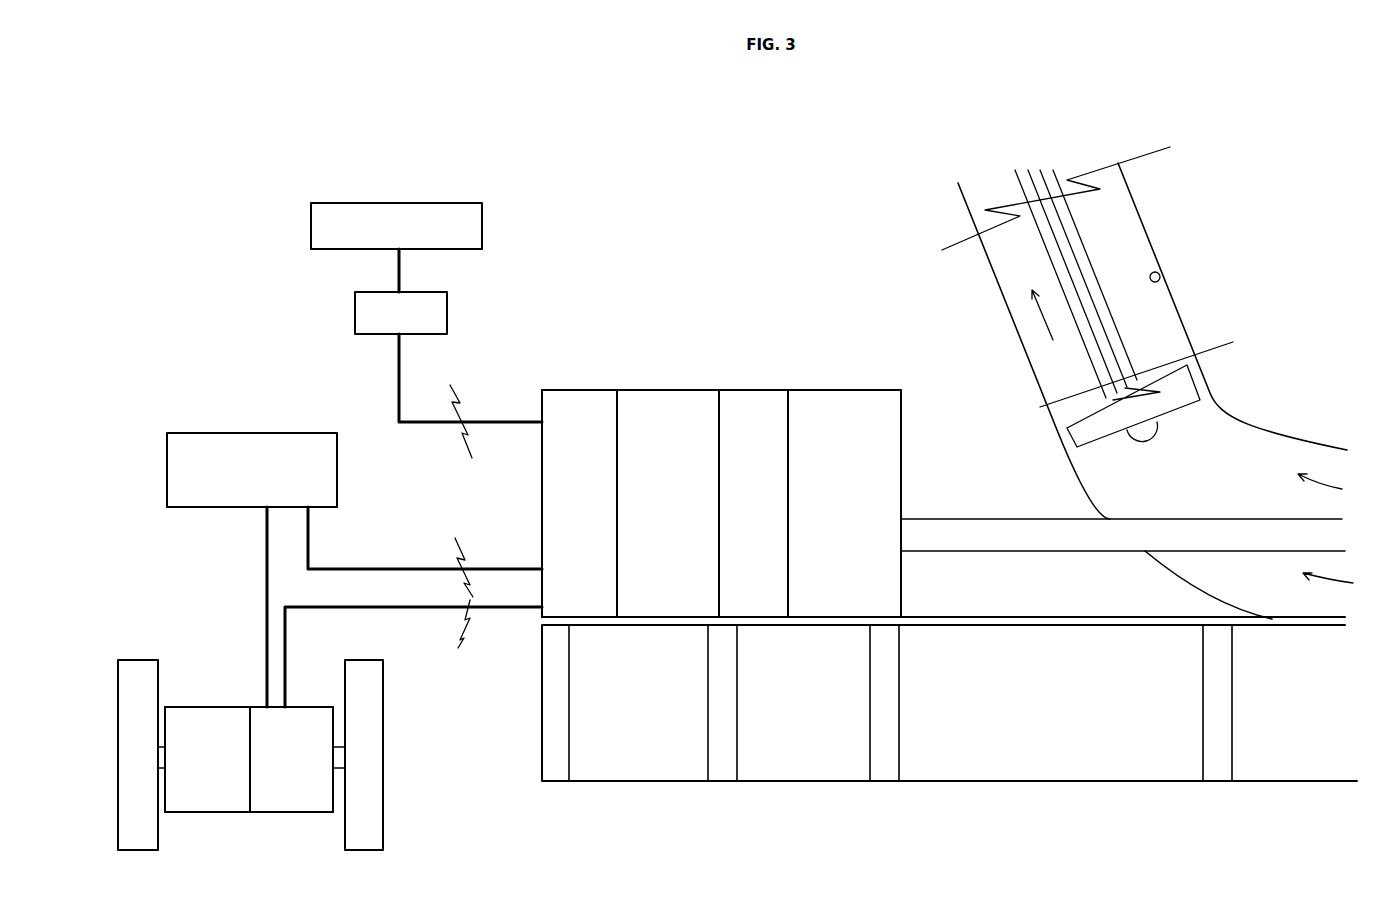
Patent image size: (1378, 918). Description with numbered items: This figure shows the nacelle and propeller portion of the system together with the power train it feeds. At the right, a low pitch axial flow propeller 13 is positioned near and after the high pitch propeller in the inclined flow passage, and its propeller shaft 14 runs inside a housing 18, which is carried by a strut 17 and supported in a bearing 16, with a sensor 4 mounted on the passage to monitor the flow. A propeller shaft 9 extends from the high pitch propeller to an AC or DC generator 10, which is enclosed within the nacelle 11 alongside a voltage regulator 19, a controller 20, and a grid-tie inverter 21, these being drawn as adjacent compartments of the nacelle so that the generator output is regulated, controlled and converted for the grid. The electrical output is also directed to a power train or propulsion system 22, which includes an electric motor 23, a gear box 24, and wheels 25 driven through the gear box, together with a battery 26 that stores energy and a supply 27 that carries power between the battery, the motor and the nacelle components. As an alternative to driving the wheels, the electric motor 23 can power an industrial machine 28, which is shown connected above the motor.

The sensor 4 is at (1162, 270).
The propeller shaft 9 is at (980, 512).
The generator 10 is at (845, 390).
The nacelle 11 is at (708, 357).
The low pitch axial flow propeller 13 is at (1158, 442).
The propeller shaft 14 is at (1063, 222).
The bearing 16 is at (1200, 353).
The strut 17 is at (1173, 350).
The housing 18 is at (1088, 257).
The voltage regulator 19 is at (752, 390).
The controller 20 is at (665, 390).
The grid-tie inverter 21 is at (580, 390).
The power train or propulsion system 22 is at (232, 682).
The electric motor 23 is at (355, 313).
The gear box 24 is at (203, 812).
The wheels 25 is at (385, 818).
The battery 26 is at (167, 467).
The supply 27 is at (400, 356).
The industrial machine 28 is at (311, 224).